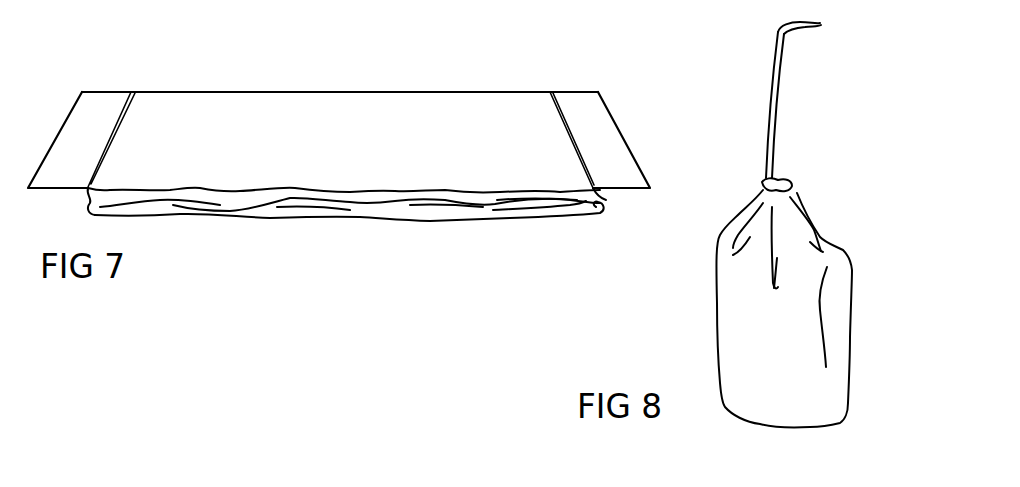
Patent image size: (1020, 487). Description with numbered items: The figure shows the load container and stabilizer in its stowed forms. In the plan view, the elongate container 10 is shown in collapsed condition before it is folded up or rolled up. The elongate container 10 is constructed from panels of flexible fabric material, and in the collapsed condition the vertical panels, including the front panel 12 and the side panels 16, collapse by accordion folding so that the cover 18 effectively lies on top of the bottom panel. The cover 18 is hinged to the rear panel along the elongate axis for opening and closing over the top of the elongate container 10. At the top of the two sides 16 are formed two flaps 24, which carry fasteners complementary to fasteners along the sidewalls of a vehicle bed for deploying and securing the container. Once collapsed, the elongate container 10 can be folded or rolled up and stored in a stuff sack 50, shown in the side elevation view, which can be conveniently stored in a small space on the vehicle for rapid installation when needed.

In FIG. 7, the elongate container 10 is at (555, 55).
In FIG. 7, the front panel 12 is at (387, 219).
In FIG. 7, the side panel 16 is at (595, 200).
In FIG. 7, the cover 18 is at (405, 151).
In FIG. 7, the flap 24 is at (63, 123).
In FIG. 8, the stuff sack 50 is at (717, 330).